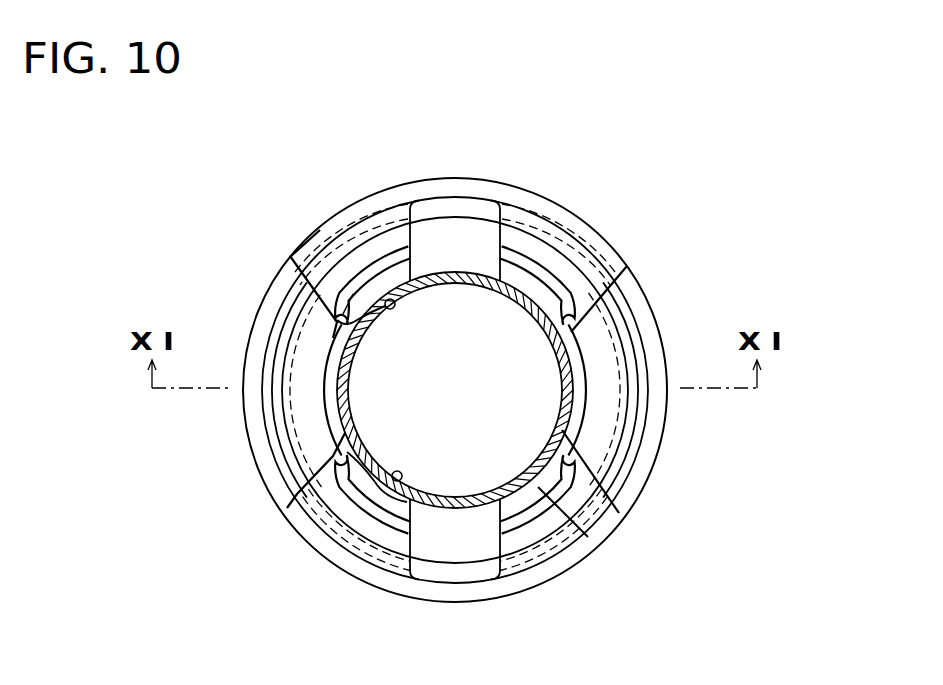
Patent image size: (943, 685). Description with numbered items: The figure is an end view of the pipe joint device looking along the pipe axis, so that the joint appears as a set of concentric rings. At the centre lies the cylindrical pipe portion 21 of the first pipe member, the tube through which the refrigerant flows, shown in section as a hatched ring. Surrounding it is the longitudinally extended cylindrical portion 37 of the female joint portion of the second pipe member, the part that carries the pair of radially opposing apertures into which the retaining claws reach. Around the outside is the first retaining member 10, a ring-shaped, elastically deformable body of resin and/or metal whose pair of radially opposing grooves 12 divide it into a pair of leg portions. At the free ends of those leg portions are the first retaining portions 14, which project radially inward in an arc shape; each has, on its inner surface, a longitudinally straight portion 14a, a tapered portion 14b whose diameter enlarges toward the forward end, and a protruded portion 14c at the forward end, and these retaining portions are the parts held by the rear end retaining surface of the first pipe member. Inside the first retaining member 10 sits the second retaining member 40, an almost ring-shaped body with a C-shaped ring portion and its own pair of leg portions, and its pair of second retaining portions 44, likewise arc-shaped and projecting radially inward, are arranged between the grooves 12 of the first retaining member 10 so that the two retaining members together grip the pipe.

The first retaining member 10 is at (455, 350).
The grooves 12 is at (452, 370).
The first retaining portions 14 is at (442, 397).
The longitudinally straight portion 14a is at (447, 389).
The tapered portion 14b is at (411, 389).
The protruded portion 14c is at (307, 366).
The cylindrical pipe portion 21 is at (554, 390).
The longitudinally extended cylindrical portion 37 is at (474, 343).
The second retaining member 40 is at (497, 390).
The second retaining portions 44 is at (443, 387).